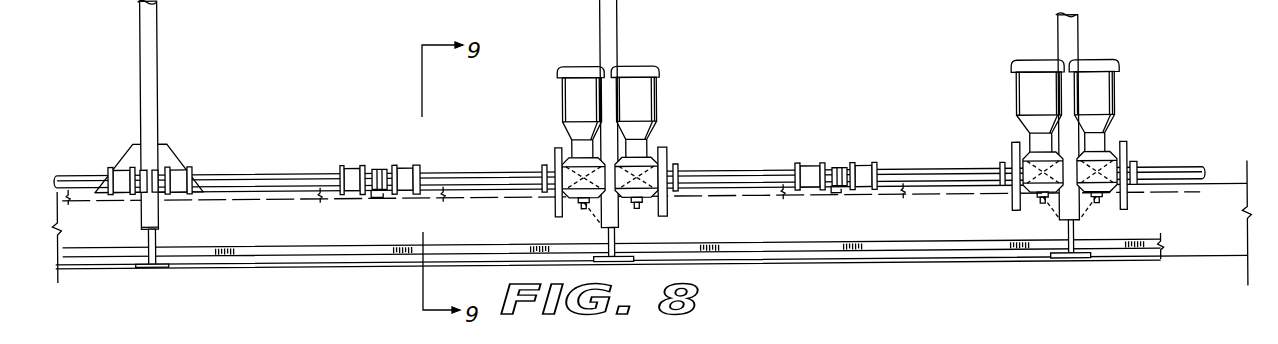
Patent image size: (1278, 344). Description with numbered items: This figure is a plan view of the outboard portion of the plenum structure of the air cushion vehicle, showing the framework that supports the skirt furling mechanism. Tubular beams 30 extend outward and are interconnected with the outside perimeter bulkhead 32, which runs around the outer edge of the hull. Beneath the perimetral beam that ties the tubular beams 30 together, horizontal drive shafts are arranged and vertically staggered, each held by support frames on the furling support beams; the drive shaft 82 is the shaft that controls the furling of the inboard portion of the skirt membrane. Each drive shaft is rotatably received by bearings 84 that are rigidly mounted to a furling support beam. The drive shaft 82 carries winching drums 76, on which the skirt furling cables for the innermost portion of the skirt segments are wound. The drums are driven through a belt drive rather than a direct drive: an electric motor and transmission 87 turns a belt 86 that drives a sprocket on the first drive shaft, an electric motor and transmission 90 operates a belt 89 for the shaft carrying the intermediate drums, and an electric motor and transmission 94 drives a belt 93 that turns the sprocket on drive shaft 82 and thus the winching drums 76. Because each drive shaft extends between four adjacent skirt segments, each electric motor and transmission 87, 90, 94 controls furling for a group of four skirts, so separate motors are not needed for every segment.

The tubular beam 30 is at (159, 77).
The outside perimeter bulkhead 32 is at (271, 268).
The winching drum 76 is at (209, 147).
The drive shaft 82 is at (78, 147).
The bearing 84 is at (381, 172).
The belt 86 is at (556, 154).
The electric motor and transmission 87 is at (555, 128).
The belt 89 is at (668, 156).
The electric motor and transmission 90 is at (662, 133).
The belt 93 is at (1012, 152).
The electric motor and transmission 94 is at (1012, 108).